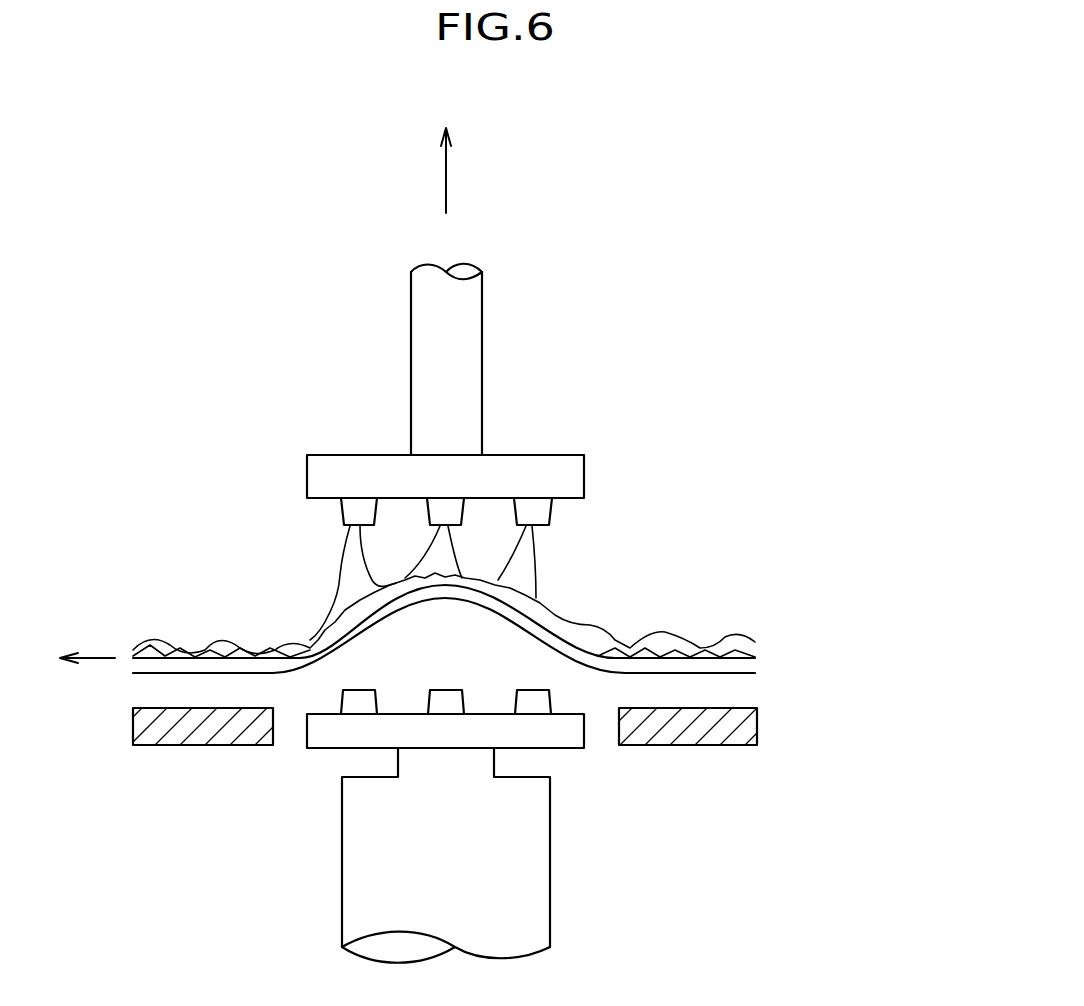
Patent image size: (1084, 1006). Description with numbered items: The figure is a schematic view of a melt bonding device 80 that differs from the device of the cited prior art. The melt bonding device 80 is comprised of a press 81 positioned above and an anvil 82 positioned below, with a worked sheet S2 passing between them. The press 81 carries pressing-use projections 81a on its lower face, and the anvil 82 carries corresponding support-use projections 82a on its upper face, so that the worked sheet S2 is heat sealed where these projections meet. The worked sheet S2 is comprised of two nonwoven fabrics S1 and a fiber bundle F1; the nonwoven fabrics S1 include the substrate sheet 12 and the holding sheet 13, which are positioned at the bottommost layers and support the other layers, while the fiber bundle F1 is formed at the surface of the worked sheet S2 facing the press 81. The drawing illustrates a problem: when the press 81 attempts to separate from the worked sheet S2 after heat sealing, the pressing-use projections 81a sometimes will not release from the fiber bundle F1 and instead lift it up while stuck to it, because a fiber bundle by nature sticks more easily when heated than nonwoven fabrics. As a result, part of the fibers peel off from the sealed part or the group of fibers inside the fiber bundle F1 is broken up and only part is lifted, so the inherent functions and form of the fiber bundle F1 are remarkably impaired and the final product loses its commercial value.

The melt bonding device 80 is at (724, 210).
The press 81 is at (563, 477).
The pressing-use projections 81a is at (350, 511).
The anvil 82 is at (562, 733).
The support-use projections 82a is at (360, 705).
The substrate sheet 12 is at (762, 660).
The holding sheet 13 is at (762, 673).
The fiber bundle F1 is at (762, 645).
The nonwoven fabrics S1 is at (517, 651).
The worked sheet S2 is at (542, 645).